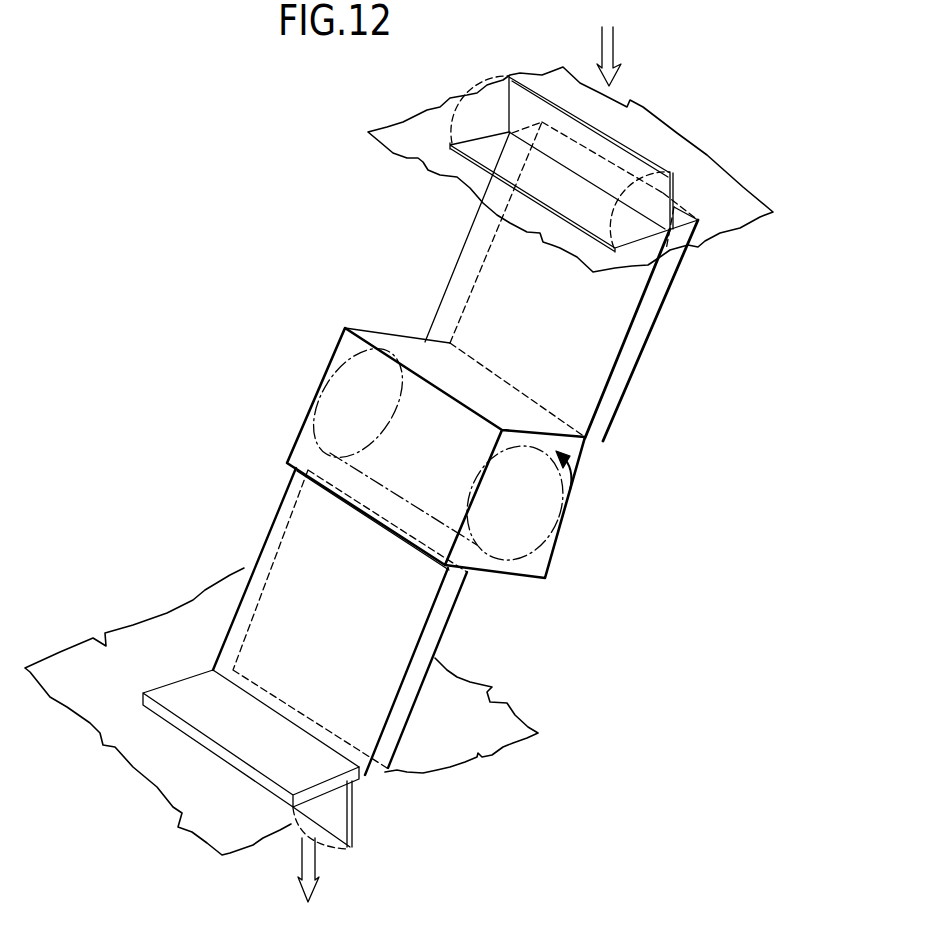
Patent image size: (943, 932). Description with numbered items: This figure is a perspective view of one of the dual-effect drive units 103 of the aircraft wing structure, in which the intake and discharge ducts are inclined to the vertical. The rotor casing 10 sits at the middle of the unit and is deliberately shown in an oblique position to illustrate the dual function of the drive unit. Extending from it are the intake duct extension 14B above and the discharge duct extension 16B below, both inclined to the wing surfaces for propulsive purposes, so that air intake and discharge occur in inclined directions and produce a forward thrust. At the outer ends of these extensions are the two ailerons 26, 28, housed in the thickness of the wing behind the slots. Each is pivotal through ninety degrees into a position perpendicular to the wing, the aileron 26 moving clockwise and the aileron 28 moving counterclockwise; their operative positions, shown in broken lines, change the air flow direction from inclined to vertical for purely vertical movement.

The aileron 26 is at (528, 105).
The intake duct extension 14B is at (473, 258).
The rotor casing 10 is at (325, 373).
The drive unit 103 is at (297, 433).
The discharge duct extension 16B is at (260, 557).
The aileron 28 is at (353, 817).